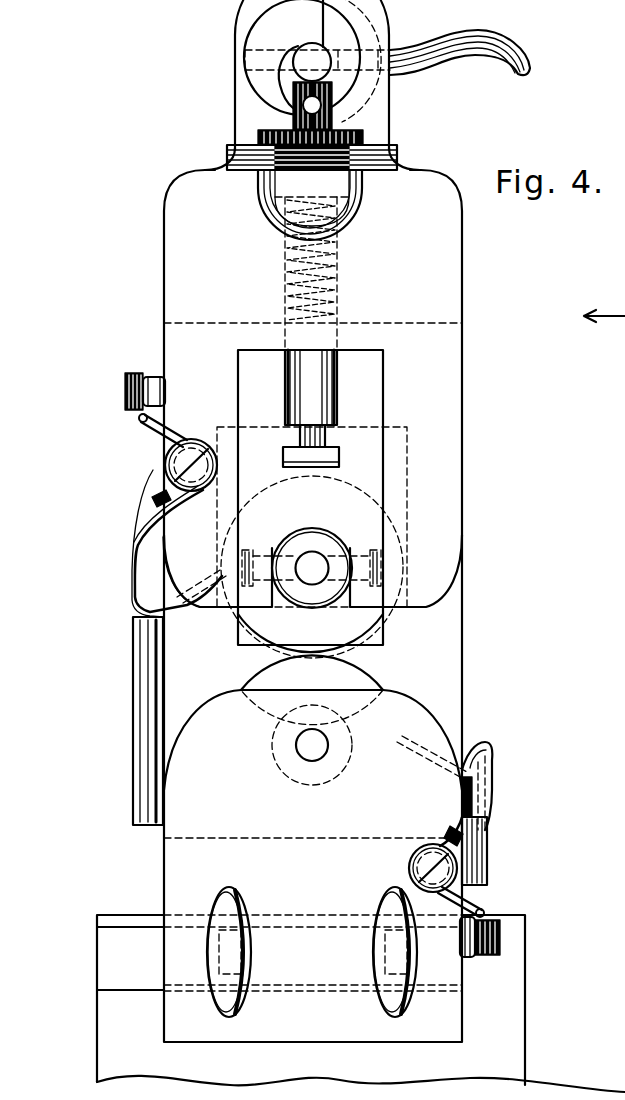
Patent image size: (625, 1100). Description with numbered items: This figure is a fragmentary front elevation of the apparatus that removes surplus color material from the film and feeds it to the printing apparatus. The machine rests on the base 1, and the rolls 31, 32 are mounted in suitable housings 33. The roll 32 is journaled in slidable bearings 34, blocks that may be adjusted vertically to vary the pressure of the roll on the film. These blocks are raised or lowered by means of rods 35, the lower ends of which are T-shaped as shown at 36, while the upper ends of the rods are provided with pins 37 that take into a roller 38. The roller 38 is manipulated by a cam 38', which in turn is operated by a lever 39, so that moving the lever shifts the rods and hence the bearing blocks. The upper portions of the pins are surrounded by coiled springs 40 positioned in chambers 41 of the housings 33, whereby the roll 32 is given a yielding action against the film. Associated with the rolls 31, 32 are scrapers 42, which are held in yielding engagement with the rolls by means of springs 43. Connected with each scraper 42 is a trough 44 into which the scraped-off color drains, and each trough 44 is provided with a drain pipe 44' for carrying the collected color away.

The base 1 is at (143, 1017).
The roll 31 is at (350, 681).
The roll 32 is at (350, 625).
The housing 33 is at (428, 398).
The slidable bearing 34 is at (360, 480).
The rod 35 is at (293, 124).
The T-shaped lower end 36 is at (323, 456).
The pin 37 is at (302, 104).
The roller 38 is at (358, 69).
The cam 38' is at (291, 85).
The lever 39 is at (527, 54).
The coiled spring 40 is at (340, 250).
The chamber 41 is at (340, 292).
The scraper 42 is at (225, 568).
The spring 43 is at (153, 430).
The trough 44 is at (320, 665).
The drain pipe 44' is at (335, 751).